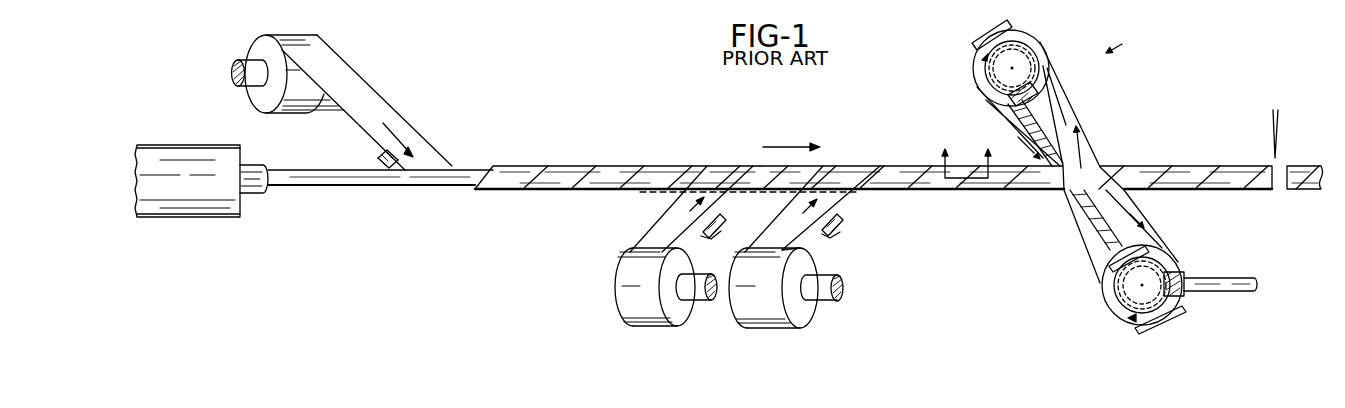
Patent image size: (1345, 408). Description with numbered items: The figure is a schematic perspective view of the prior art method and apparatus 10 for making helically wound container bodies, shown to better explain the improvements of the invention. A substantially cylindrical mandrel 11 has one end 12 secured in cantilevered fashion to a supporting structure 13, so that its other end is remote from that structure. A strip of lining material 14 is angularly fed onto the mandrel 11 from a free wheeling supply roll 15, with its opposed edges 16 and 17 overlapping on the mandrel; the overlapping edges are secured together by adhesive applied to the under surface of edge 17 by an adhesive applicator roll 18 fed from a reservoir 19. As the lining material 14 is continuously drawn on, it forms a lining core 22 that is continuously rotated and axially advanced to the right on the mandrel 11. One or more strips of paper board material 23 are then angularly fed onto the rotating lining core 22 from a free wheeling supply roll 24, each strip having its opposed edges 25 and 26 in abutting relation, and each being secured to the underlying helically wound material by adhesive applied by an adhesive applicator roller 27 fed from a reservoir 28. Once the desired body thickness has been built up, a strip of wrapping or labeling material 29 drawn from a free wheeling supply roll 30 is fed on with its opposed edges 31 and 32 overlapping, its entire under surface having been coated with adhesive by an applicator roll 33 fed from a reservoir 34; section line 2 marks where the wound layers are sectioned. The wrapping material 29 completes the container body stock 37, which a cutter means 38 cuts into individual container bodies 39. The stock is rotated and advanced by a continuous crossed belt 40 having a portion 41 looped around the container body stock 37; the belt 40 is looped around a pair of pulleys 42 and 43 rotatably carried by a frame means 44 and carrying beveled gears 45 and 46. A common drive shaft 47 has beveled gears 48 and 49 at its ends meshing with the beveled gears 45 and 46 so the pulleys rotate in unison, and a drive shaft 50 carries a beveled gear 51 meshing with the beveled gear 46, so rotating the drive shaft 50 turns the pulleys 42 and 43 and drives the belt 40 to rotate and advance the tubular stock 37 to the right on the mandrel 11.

The section line 2- 2 is at (966, 153).
The prior art method and apparatus 10 is at (1126, 42).
The mandrel 11 is at (403, 186).
The end of mandrel 12 is at (284, 193).
The supporting structure 13 is at (240, 151).
The strip of lining material 14 is at (390, 120).
The free wheeling supply roll 15 is at (270, 103).
The edge of lining material 16 is at (422, 134).
The edge of lining material 17 is at (348, 114).
The adhesive applicator roll 18 is at (378, 153).
The reservoir 19 is at (377, 160).
The lining core 22 is at (617, 168).
The strip of paper board material 23 is at (688, 201).
The free wheeling supply roll 24 is at (687, 314).
The edge of paper board material 25 is at (650, 229).
The edge of paper board material 26 is at (712, 200).
The adhesive applicator roller 27 is at (724, 218).
The reservoir 28 is at (718, 236).
The strip of wrapping or labeling material 29 is at (830, 203).
The free wheeling supply roll 30 is at (804, 310).
The edge of wrapping material 31 is at (791, 213).
The edge of wrapping material 32 is at (810, 240).
The applicator roll 33 is at (838, 227).
The reservoir 34 is at (847, 238).
The container body stock 37 is at (897, 172).
The cutter means 38 is at (1280, 122).
The individual container bodies 39 is at (1295, 190).
The continuous crossed belt 40 is at (1070, 127).
The portion of belt 41 is at (1062, 190).
The pulley 42 is at (1037, 34).
The pulley 43 is at (1124, 311).
The frame means 44 is at (1183, 313).
The beveled gear 45 is at (1048, 48).
The beveled gear 46 is at (1177, 259).
The common drive shaft 47 is at (1045, 110).
The beveled gear 48 is at (1035, 85).
The beveled gear 49 is at (1153, 236).
The drive shaft 50 is at (1238, 277).
The beveled gear 51 is at (1186, 272).